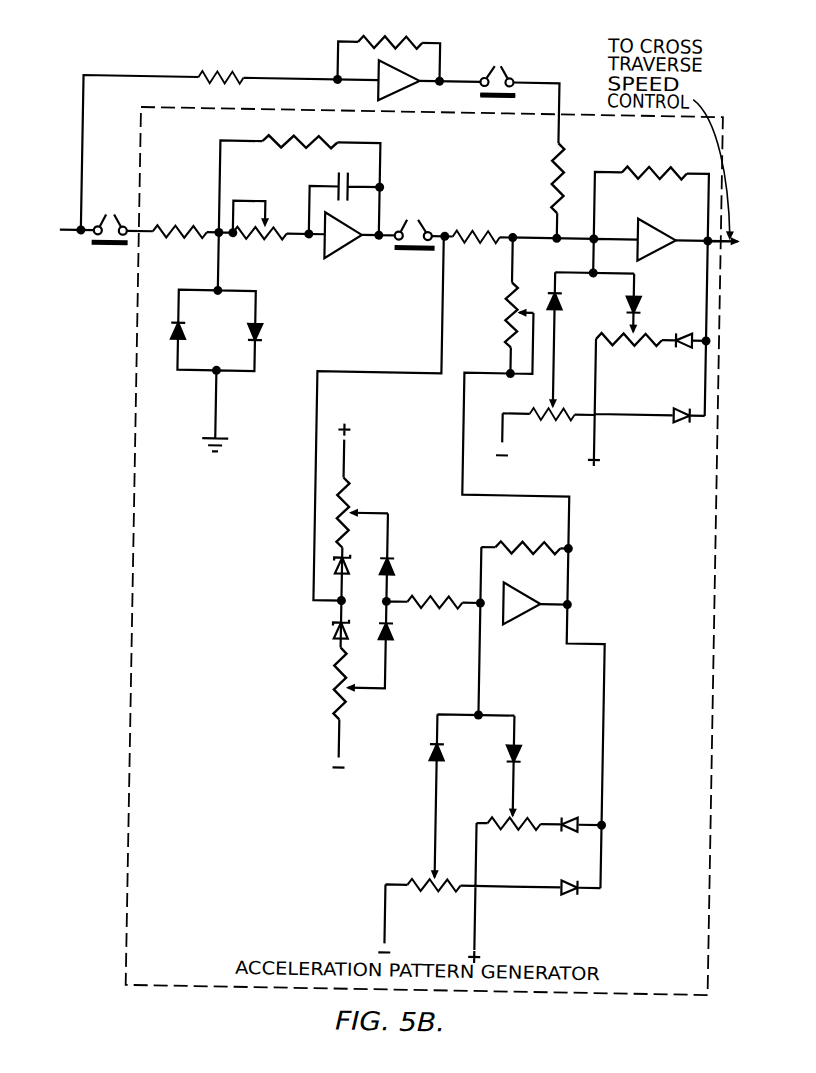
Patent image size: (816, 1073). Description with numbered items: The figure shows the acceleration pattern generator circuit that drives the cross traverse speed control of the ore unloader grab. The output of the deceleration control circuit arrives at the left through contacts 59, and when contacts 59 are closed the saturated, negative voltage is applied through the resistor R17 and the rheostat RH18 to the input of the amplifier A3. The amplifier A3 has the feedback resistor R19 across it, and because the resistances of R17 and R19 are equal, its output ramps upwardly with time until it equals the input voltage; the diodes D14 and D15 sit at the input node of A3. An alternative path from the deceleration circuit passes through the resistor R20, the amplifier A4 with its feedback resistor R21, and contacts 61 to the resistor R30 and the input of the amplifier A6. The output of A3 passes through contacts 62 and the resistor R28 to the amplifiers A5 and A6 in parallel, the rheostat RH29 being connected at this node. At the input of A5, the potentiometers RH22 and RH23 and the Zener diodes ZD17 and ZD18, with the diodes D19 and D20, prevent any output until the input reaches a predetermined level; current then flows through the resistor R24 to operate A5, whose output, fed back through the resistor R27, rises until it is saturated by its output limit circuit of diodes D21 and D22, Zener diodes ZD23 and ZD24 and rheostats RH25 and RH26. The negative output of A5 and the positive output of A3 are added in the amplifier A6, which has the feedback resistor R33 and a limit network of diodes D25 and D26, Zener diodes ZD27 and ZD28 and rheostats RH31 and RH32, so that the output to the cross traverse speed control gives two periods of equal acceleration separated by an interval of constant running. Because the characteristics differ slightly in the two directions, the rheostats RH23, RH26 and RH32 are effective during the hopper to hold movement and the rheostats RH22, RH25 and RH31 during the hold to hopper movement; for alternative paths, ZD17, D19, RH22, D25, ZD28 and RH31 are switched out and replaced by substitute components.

The resistor R20 is at (221, 68).
The resistor R21 is at (390, 32).
The amplifier A4 is at (403, 83).
The contacts 61 is at (498, 71).
The contacts 59 is at (110, 219).
The resistor R17 is at (180, 222).
The rheostat RH18 is at (259, 231).
The resistor R19 is at (300, 132).
The amplifier A3 is at (347, 238).
The contacts 62 is at (410, 223).
The resistor R28 is at (477, 227).
The resistor R30 is at (538, 178).
The resistor R33 is at (654, 164).
The amplifier A6 is at (659, 236).
The diode D14 is at (165, 333).
The diode D15 is at (273, 335).
The rheostat RH29 is at (484, 314).
The diode D25 is at (576, 298).
The diode D26 is at (650, 307).
The rheostat RH32 is at (628, 352).
The Zener diode ZD27 is at (665, 365).
The Zener diode ZD28 is at (685, 429).
The rheostat RH31 is at (546, 427).
The potentiometer RH22 is at (368, 513).
The Zener diode ZD17 is at (343, 563).
The Zener diode ZD18 is at (317, 631).
The potentiometer RH23 is at (314, 683).
The diode D19 is at (407, 562).
The diode D20 is at (402, 644).
The resistor R24 is at (435, 614).
The resistor R27 is at (528, 538).
The amplifier A5 is at (525, 607).
The diode D21 is at (423, 756).
The diode D22 is at (531, 754).
The rheostat RH26 is at (512, 834).
The Zener diode ZD23 is at (574, 802).
The Zener diode ZD24 is at (565, 900).
The rheostat RH25 is at (433, 898).